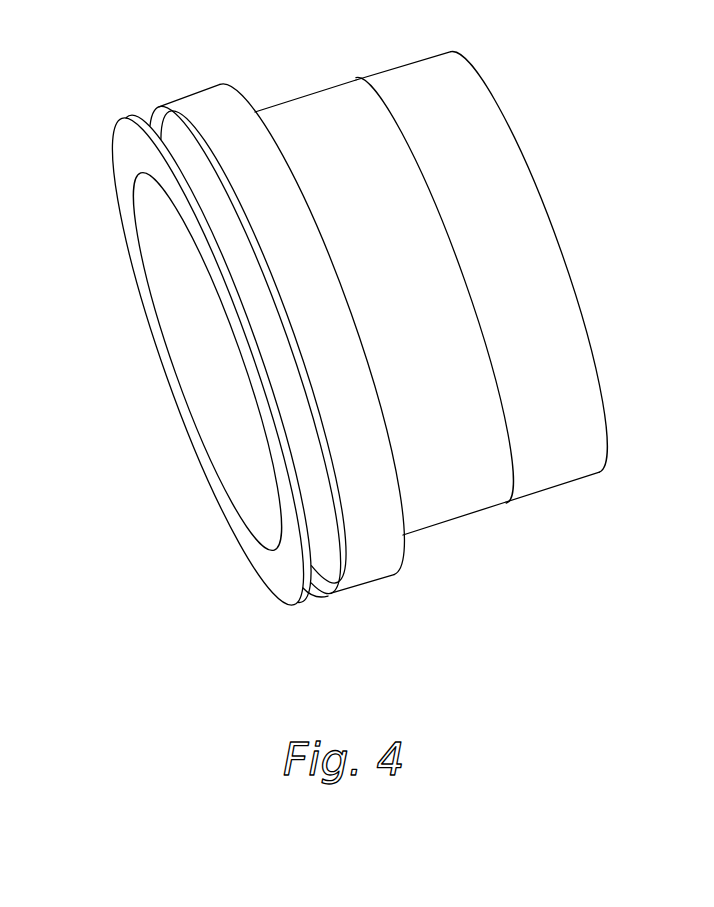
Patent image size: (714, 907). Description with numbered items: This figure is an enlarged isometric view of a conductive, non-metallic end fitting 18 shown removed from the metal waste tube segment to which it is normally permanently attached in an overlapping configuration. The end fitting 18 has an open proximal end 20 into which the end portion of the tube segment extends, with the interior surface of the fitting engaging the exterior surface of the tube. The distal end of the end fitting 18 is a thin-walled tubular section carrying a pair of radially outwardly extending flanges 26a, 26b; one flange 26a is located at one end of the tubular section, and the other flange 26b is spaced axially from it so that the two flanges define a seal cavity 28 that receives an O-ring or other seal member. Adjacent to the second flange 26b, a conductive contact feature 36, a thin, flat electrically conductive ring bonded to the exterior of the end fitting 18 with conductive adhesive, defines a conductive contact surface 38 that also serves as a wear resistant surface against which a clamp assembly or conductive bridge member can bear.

The end fitting 18 is at (334, 340).
The open proximal end 20 is at (543, 252).
The flange 26a is at (273, 580).
The flange 26b is at (377, 563).
The seal cavity 28 is at (318, 572).
The conductive contact feature 36 is at (328, 100).
The conductive contact surface 38 is at (403, 167).